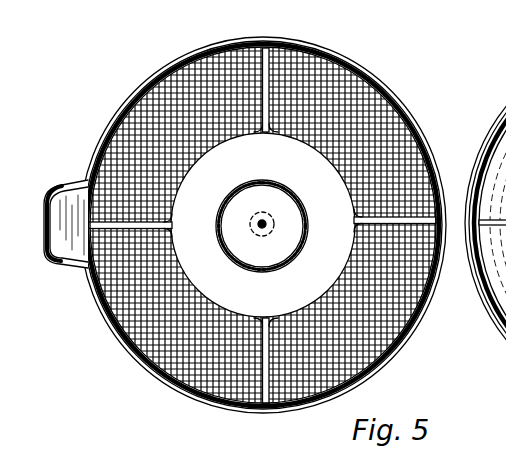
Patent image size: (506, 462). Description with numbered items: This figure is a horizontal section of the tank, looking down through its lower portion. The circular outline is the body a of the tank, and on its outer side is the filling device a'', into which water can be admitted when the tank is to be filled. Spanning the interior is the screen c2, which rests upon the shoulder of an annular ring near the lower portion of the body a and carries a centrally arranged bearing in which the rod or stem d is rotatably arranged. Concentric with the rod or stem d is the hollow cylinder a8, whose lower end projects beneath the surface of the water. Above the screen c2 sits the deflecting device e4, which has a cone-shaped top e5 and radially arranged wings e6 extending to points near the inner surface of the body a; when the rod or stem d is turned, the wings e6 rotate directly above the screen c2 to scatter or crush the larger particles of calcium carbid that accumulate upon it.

The body a is at (263, 225).
The filling device a'' is at (61, 241).
The hollow cylinder a8 is at (280, 262).
The screen c2 is at (378, 329).
The rod or stem d is at (262, 230).
The deflecting device e4 is at (190, 281).
The cone-shaped top e5 is at (263, 225).
The radially-arranged wings e6 is at (268, 68).